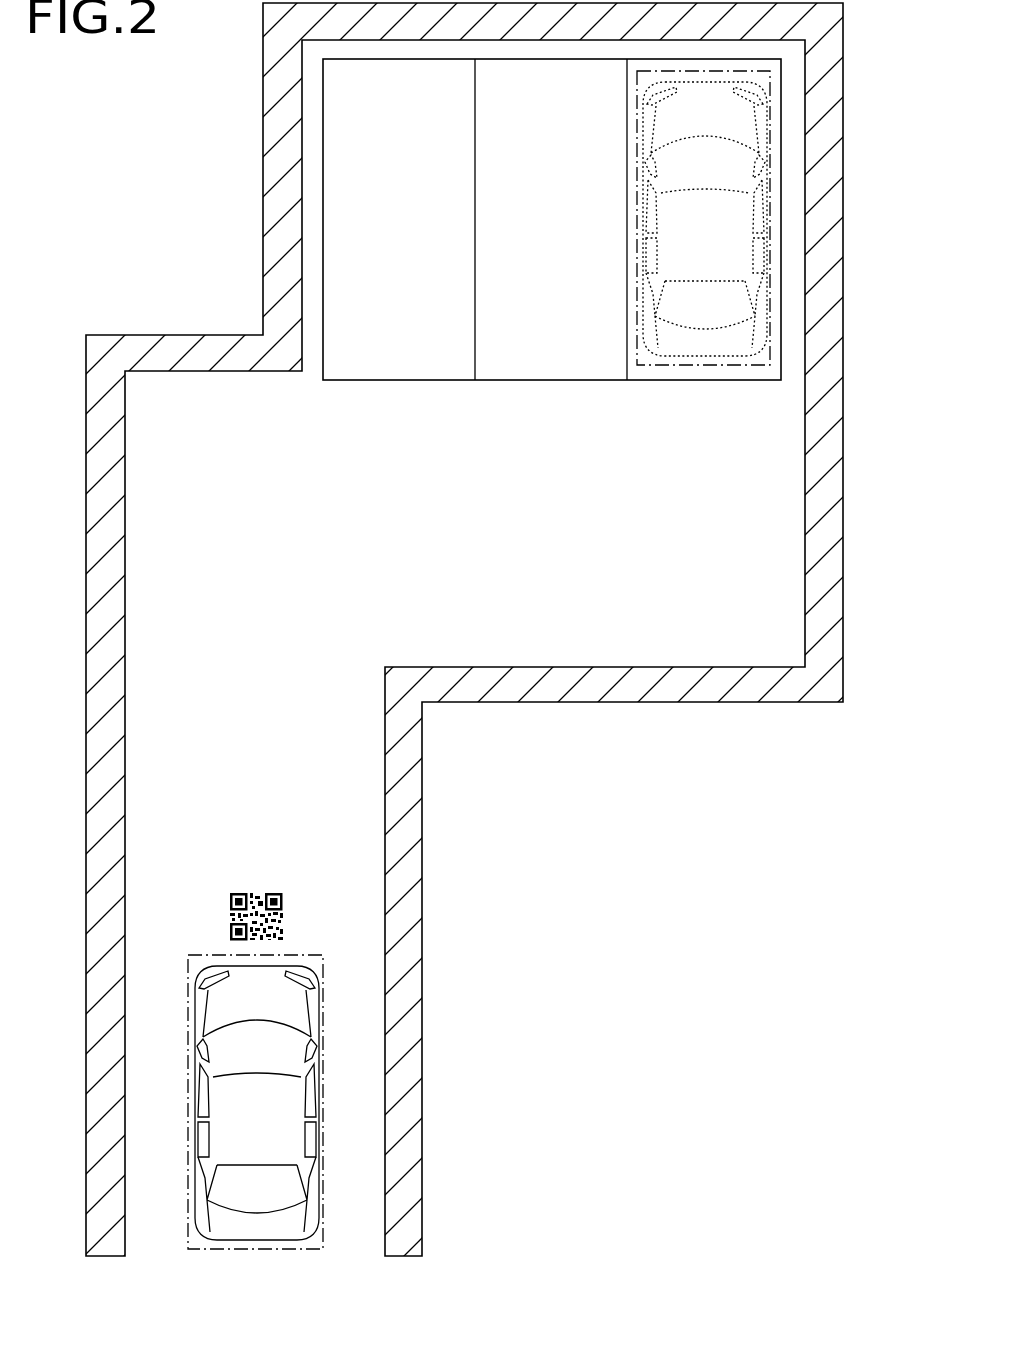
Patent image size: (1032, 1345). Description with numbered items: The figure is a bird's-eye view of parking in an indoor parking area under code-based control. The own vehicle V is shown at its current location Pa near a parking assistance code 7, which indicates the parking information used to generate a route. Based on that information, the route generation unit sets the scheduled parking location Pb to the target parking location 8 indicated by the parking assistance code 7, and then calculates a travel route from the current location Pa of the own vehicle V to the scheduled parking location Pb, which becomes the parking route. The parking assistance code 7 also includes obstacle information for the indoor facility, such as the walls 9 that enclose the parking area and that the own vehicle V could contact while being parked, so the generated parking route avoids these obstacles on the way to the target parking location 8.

The wall 9 is at (86, 697).
The target parking location 8 is at (710, 383).
The scheduled parking location Pb is at (772, 220).
The parking assistance code 7 is at (230, 920).
The current location of the own vehicle Pa is at (192, 1103).
The own vehicle V is at (318, 1130).